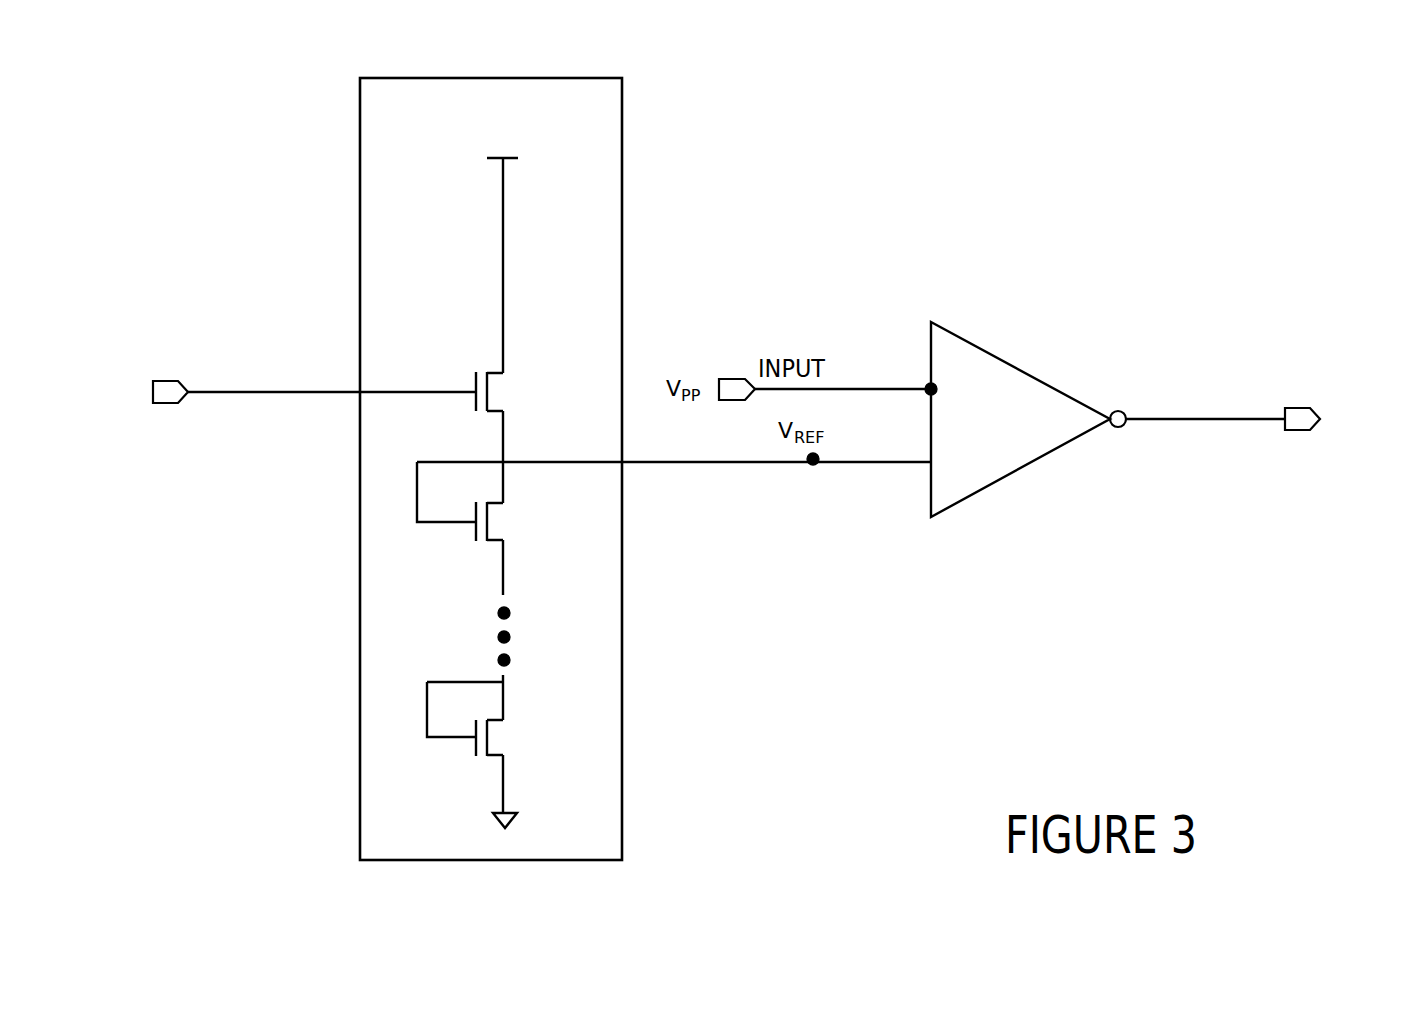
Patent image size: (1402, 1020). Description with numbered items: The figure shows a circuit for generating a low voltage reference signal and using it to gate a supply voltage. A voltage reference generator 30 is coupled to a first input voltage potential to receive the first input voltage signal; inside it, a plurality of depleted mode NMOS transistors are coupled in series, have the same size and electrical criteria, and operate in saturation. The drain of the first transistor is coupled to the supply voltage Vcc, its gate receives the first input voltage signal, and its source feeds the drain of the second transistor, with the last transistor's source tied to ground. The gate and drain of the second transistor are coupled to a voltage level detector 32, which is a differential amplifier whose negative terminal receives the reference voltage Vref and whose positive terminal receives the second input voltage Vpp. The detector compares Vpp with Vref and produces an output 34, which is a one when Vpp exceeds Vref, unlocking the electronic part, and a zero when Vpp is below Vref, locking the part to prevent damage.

The voltage reference generator 30 is at (622, 145).
The voltage level detector 32 is at (983, 350).
The output 34 is at (1160, 419).